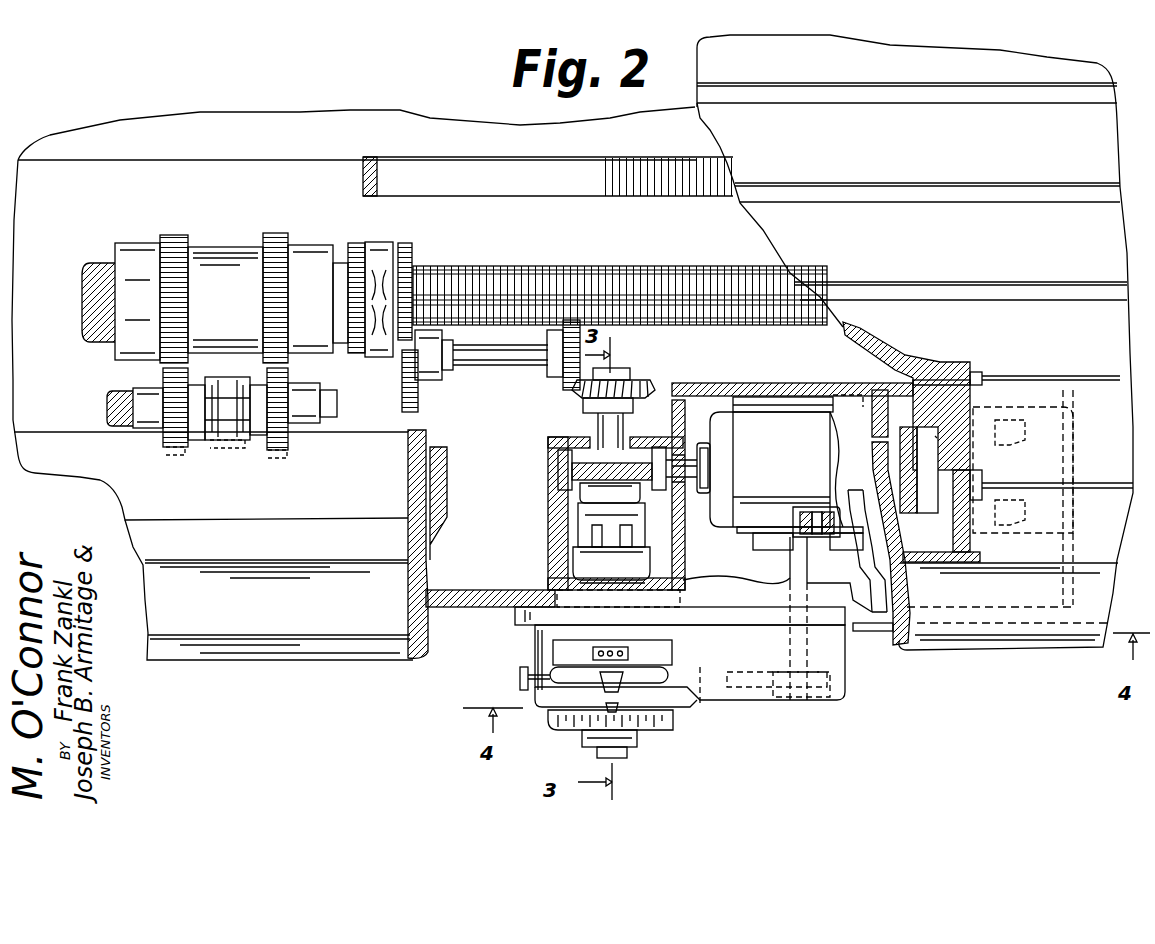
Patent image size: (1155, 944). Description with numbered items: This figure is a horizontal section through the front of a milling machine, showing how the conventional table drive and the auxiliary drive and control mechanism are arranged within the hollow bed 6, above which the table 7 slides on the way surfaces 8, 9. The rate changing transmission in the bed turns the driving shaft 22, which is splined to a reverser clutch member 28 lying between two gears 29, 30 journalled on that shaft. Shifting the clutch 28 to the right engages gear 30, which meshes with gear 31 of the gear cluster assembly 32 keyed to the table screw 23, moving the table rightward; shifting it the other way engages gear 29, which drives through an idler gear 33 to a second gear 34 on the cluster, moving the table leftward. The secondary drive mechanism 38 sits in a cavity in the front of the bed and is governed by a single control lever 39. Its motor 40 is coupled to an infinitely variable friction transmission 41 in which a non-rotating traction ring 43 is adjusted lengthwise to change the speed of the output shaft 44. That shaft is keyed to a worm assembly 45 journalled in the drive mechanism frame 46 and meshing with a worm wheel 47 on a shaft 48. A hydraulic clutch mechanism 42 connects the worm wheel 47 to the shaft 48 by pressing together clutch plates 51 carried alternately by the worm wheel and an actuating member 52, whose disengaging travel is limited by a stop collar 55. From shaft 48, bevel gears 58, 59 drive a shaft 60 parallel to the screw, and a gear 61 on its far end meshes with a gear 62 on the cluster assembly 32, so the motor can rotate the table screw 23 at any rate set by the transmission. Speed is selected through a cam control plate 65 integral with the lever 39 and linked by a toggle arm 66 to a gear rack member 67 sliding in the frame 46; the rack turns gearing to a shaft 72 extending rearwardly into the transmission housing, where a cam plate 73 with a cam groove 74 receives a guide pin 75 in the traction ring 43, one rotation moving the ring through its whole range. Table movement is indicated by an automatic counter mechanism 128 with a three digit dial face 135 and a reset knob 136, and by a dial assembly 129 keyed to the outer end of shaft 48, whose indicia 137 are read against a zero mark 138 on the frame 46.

The bed 6 is at (302, 660).
The table 7 is at (1037, 68).
The way surface 8 is at (433, 436).
The way surface 9 is at (412, 126).
The shaft 22 is at (112, 408).
The screw 23 is at (650, 264).
The reverser clutch member 28 is at (228, 440).
The gear 29 is at (160, 373).
The gear 30 is at (290, 393).
The gear 31 is at (277, 234).
The gear cluster assembly 32 is at (236, 236).
The idler gear 33 is at (196, 352).
The second gear 34 is at (193, 294).
The secondary drive mechanism 38 is at (832, 714).
The control lever 39 is at (622, 690).
The motor 40 is at (1020, 412).
The variable speed transmission 41 is at (790, 418).
The clutch mechanism 42 is at (556, 513).
The traction ring 43 is at (815, 507).
The output shaft 44 is at (708, 468).
The worm assembly 45 is at (610, 499).
The drive mechanism frame 46 is at (557, 528).
The worm wheel 47 is at (558, 468).
The shaft 48 is at (626, 430).
The clutch plates 51 is at (611, 547).
The actuating member 52 is at (642, 551).
The stop collar 55 is at (646, 578).
The bevel gear 58 is at (645, 380).
The bevel gear 59 is at (565, 382).
The shaft 60 is at (470, 366).
The gear 61 is at (400, 400).
The gear 62 is at (412, 245).
The cam control plate 65 is at (678, 672).
The toggle arm 66 is at (700, 704).
The gear rack member 67 is at (768, 672).
The shaft 72 is at (785, 598).
The cam plate 73 is at (810, 540).
The cam groove 74 is at (867, 545).
The guide pin 75 is at (800, 515).
The counter mechanism 128 is at (650, 648).
The dial assembly 129 is at (670, 730).
The dial face 135 is at (598, 653).
The reset knob 136 is at (520, 675).
The indicia 137 is at (555, 717).
The zero mark 138 is at (606, 705).